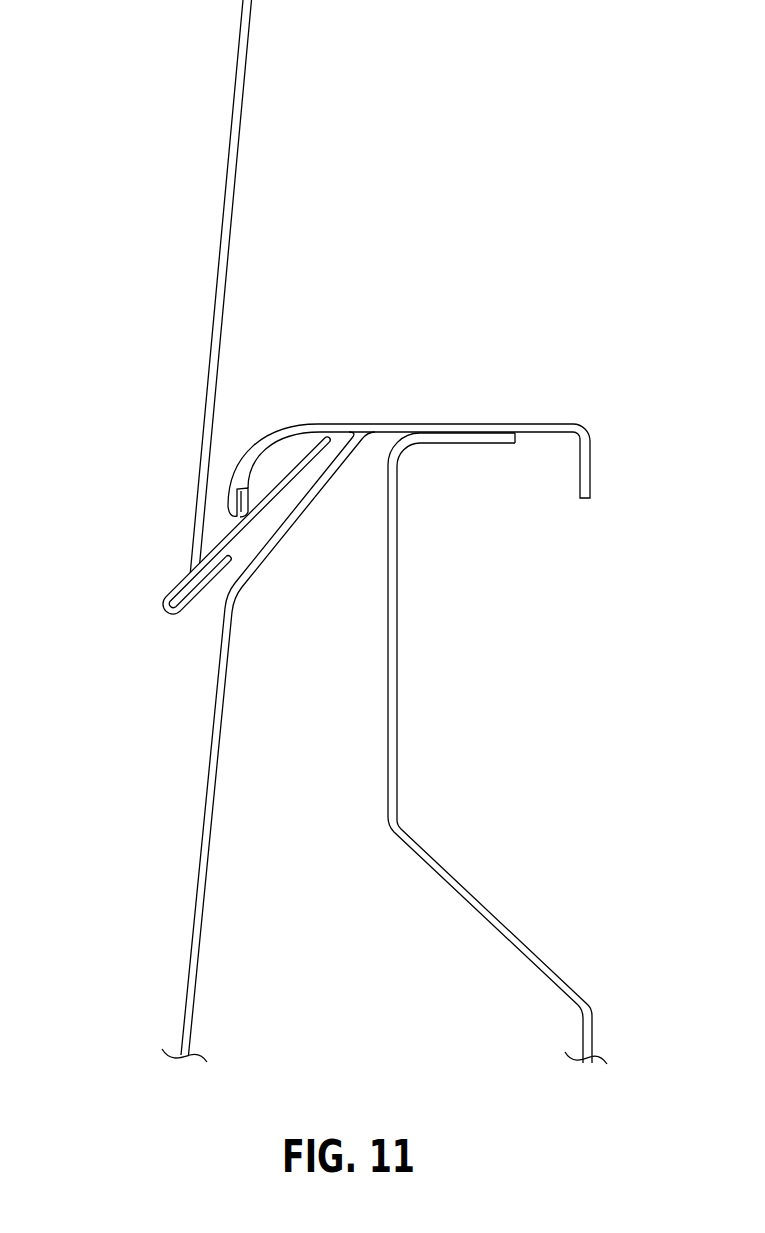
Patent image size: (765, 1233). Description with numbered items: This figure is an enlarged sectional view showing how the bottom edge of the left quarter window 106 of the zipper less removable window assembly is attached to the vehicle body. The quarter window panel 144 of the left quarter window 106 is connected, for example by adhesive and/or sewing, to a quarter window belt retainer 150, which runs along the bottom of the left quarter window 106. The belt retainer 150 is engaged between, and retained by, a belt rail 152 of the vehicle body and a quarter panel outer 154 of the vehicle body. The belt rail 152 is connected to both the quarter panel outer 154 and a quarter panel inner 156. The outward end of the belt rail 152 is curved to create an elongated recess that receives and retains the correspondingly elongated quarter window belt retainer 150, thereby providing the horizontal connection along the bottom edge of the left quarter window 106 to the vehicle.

The left quarter window 106 is at (211, 286).
The quarter window panel 144 is at (213, 285).
The quarter window belt retainer 150 is at (224, 548).
The belt rail 152 is at (288, 432).
The quarter panel outer 154 is at (195, 899).
The quarter panel inner 156 is at (495, 918).